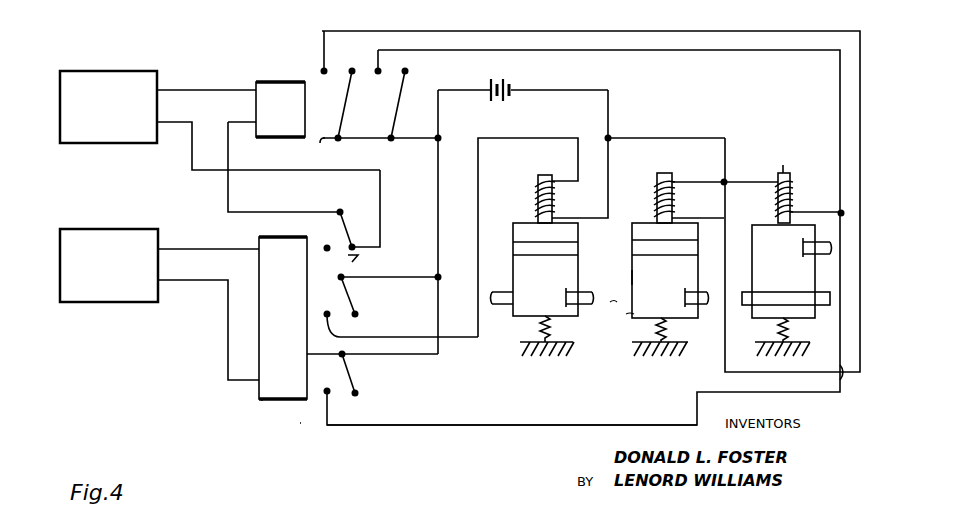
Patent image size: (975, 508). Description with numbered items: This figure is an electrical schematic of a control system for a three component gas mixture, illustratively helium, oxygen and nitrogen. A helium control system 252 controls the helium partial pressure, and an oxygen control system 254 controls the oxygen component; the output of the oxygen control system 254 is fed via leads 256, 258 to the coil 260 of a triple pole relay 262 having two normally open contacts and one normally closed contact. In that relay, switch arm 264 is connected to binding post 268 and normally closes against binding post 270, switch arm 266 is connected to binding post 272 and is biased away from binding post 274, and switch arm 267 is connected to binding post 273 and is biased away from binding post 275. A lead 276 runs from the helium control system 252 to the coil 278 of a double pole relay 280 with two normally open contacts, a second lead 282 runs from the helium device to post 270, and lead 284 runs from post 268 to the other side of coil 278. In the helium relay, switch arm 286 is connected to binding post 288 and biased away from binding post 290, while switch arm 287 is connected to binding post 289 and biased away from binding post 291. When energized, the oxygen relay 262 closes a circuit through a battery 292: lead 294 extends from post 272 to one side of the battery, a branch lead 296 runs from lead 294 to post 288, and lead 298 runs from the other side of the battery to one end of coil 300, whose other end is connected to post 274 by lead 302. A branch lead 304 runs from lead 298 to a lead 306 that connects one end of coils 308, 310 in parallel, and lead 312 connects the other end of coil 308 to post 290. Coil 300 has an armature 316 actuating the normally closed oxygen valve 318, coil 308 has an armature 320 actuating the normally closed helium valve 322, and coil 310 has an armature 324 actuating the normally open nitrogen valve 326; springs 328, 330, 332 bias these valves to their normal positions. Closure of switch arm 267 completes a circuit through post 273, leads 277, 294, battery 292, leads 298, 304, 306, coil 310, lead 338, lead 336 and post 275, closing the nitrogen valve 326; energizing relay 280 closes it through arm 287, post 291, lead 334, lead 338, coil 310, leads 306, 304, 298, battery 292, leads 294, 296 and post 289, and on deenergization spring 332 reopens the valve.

The helium control system 252 is at (127, 70).
The oxygen control system 254 is at (126, 228).
The lead 256 is at (209, 248).
The lead 258 is at (181, 280).
The coil 260 is at (262, 400).
The relay 262 is at (298, 423).
The switch arm 264 is at (350, 228).
The switch arm 266 is at (340, 292).
The switch arm 267 is at (350, 370).
The binding post 268 is at (350, 204).
The binding post 270 is at (333, 264).
The binding post 272 is at (344, 273).
The binding post 273 is at (307, 354).
The binding post 274 is at (358, 316).
The binding post 275 is at (327, 391).
The lead 276 is at (214, 89).
The lead 277 is at (437, 291).
The coil 278 is at (272, 86).
The relay 280 is at (300, 47).
The lead 282 is at (203, 117).
The lead 284 is at (280, 210).
The switch arm 286 is at (343, 117).
The switch arm 287 is at (395, 117).
The binding post 288 is at (323, 152).
The binding post 289 is at (400, 142).
The binding post 290 is at (324, 71).
The binding post 291 is at (376, 66).
The battery 292 is at (510, 88).
The lead 294 is at (458, 201).
The branch lead 296 is at (417, 140).
The lead 298 is at (612, 89).
The coil 300 is at (538, 193).
The lead 302 is at (512, 137).
The branch lead 304 is at (662, 137).
The lead 306 is at (740, 162).
The coil 308 is at (657, 203).
The coil 310 is at (778, 203).
The lead 312 is at (678, 30).
The armature 316 is at (538, 172).
The valve 318 is at (576, 236).
The armature 320 is at (666, 170).
The valve 322 is at (636, 275).
The armature 324 is at (783, 172).
The valve 326 is at (762, 310).
The spring 328 is at (538, 331).
The spring 330 is at (655, 331).
The spring 332 is at (790, 333).
The lead 334 is at (752, 50).
The lead 336 is at (608, 424).
The lead 338 is at (818, 212).